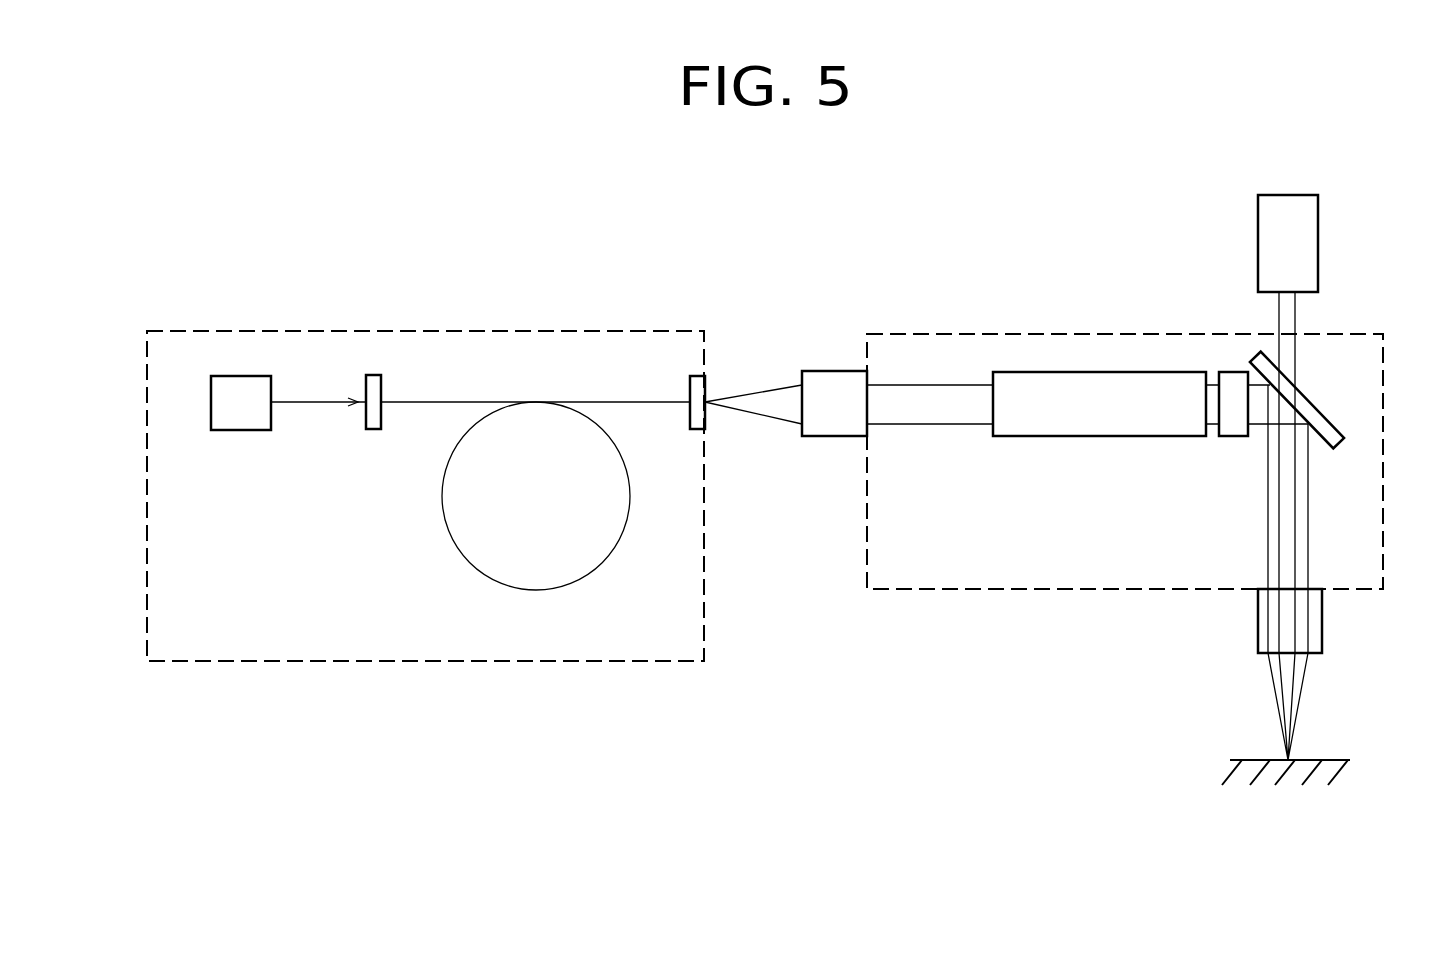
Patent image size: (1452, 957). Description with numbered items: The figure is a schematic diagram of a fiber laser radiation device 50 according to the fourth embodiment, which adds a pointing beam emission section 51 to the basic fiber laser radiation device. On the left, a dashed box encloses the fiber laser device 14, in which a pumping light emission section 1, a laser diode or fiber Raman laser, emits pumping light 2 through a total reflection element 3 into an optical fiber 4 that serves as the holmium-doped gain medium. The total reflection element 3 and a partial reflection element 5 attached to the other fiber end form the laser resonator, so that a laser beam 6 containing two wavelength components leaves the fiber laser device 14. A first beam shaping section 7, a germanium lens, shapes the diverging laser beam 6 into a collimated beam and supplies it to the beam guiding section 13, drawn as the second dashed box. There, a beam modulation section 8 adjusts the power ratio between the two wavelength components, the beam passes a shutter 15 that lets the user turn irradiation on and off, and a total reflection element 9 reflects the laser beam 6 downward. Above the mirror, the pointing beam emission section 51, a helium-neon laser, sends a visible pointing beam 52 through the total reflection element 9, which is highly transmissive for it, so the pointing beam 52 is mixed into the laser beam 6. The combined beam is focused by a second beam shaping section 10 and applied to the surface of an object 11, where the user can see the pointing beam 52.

The pumping light emission section 1 is at (243, 375).
The pumping light 2 is at (320, 402).
The total reflection element 3 is at (381, 385).
The optical fiber 4 is at (467, 560).
The partial reflection element 5 is at (690, 378).
The laser beam 6 is at (752, 415).
The first beam shaping section 7 is at (836, 371).
The beam modulation section 8 is at (1026, 372).
The total reflection element 9 is at (1310, 392).
The second beam shaping section 10 is at (1258, 628).
The object 11 is at (1267, 762).
The beam guiding section 13 is at (940, 590).
The fiber laser device 14 is at (318, 661).
The shutter 15 is at (1238, 436).
The fiber laser radiation device 50 is at (884, 186).
The pointing beam emission section 51 is at (1258, 228).
The pointing beam 52 is at (1297, 325).